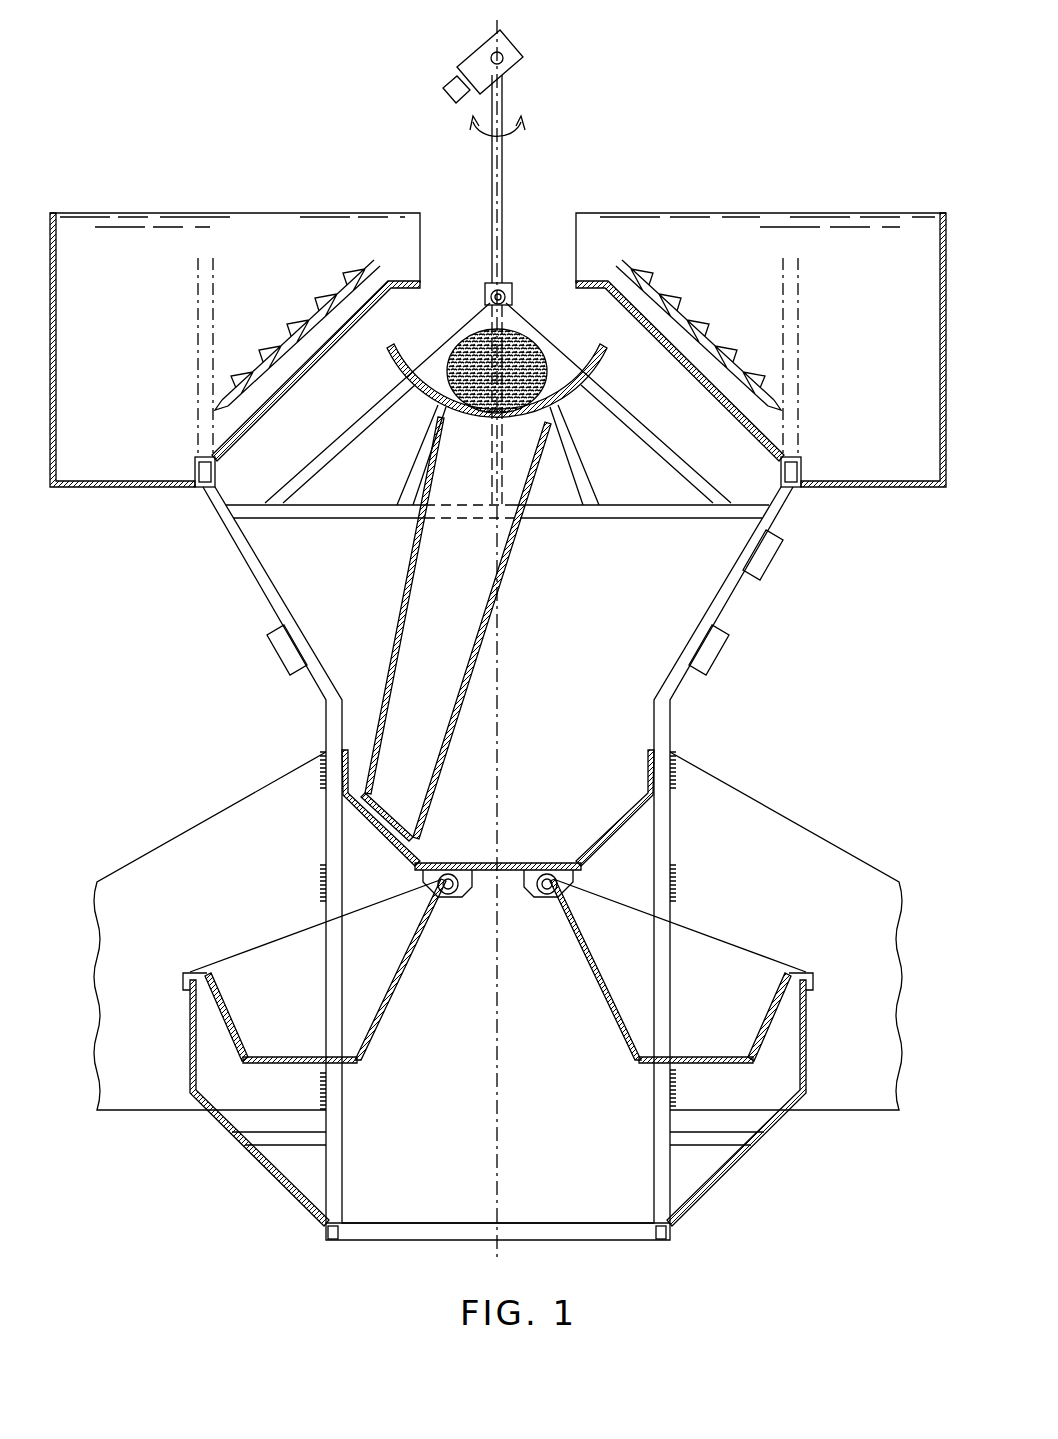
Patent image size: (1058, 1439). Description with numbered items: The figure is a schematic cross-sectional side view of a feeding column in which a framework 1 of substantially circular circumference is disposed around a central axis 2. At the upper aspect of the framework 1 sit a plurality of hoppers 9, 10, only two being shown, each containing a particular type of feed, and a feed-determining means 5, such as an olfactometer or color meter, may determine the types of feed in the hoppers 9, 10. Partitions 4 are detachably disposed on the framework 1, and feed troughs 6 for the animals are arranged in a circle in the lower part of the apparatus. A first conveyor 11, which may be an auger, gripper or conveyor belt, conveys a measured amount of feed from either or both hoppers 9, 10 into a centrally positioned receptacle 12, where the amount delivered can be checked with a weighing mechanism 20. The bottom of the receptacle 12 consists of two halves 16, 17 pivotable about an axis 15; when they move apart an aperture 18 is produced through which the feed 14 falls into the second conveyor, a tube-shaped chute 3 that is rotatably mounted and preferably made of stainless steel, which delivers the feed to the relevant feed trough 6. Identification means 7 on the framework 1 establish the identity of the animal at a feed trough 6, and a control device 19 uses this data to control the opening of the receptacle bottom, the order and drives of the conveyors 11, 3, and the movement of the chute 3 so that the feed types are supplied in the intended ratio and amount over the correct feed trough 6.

The framework 1 is at (652, 1107).
The central axis 2 is at (497, 1177).
The second conveyor (tube-shaped chute) 3 is at (503, 562).
The partitions 4 is at (203, 853).
The feed-determining means 5 is at (507, 50).
The feed troughs 6 is at (268, 960).
The identification means 7 is at (290, 650).
The hopper 9 is at (277, 230).
The hopper 10 is at (725, 228).
The first conveyor 11 is at (328, 297).
The receptacle 12 is at (567, 412).
The feed 14 is at (522, 332).
The axis 15 is at (512, 285).
The bottom half 16 is at (447, 357).
The bottom half 17 is at (550, 357).
The aperture 18 is at (550, 420).
The control device 19 is at (768, 550).
The weighing mechanism 20 is at (487, 283).